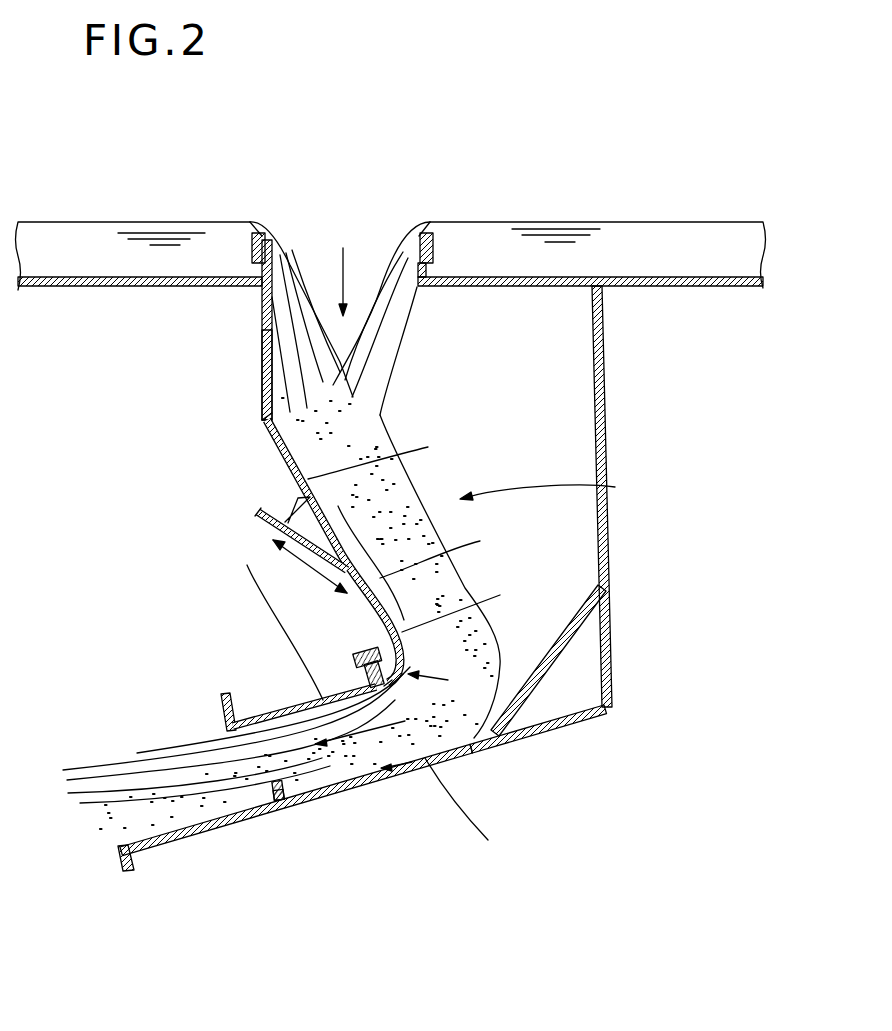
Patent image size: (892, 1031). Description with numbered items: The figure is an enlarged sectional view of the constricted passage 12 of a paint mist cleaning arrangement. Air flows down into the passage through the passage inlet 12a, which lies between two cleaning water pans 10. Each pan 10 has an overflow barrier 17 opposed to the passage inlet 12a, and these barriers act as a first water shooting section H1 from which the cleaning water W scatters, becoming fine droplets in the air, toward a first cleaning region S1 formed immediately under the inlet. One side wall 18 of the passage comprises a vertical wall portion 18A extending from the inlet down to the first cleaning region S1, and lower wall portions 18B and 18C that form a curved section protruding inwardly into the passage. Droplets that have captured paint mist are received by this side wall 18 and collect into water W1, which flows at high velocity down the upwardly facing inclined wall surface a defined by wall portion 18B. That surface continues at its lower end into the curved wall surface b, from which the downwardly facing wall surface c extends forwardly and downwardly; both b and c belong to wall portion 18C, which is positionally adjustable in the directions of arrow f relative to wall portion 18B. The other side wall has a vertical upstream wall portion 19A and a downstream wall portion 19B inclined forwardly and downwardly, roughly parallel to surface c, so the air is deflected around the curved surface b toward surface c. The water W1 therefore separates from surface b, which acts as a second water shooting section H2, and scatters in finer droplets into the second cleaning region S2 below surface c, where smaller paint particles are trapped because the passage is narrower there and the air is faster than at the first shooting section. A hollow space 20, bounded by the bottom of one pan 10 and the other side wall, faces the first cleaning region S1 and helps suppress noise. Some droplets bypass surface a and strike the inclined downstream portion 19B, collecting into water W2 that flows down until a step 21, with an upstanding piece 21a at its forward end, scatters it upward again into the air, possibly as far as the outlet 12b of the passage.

The cleaning water pan 10 is at (128, 276).
The constricted passage 12 is at (560, 485).
The passage inlet 12a is at (261, 309).
The outlet 12b is at (178, 808).
The overflow barrier 17 is at (250, 243).
The side wall 18 is at (157, 413).
The vertical wall portion 18A is at (261, 402).
The lower wall portion 18B is at (308, 479).
The lower wall portion 18C is at (392, 638).
The upstream wall portion 19A is at (603, 408).
The downstream wall portion 19B is at (470, 750).
The hollow space 20 is at (560, 363).
The step 21 is at (291, 790).
The upstanding piece 21a is at (277, 791).
The cleaning water W is at (70, 228).
The water W1 is at (452, 551).
The water W2 is at (397, 723).
The first cleaning region S1 is at (340, 402).
The second cleaning region S2 is at (333, 757).
The first water shooting section H1 is at (258, 212).
The second water shooting section H2 is at (451, 675).
The upwardly facing inclined wall surface a is at (379, 452).
The curved wall surface b is at (465, 603).
The downwardly facing wall surface c is at (272, 722).
The arrow indicating adjustment directions f is at (301, 547).